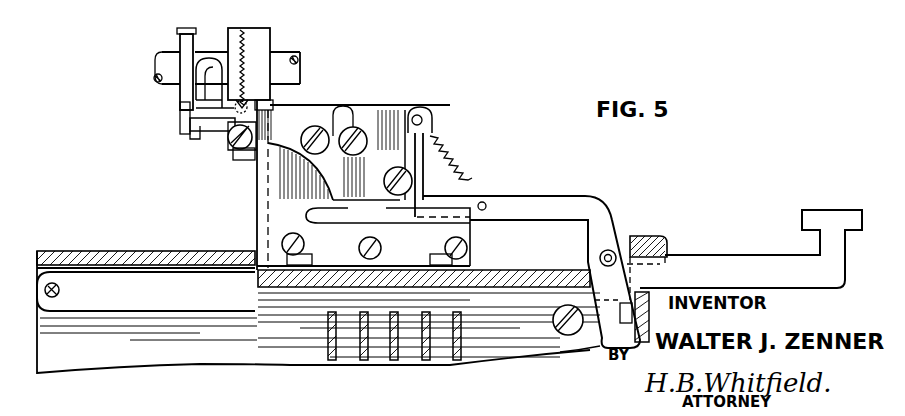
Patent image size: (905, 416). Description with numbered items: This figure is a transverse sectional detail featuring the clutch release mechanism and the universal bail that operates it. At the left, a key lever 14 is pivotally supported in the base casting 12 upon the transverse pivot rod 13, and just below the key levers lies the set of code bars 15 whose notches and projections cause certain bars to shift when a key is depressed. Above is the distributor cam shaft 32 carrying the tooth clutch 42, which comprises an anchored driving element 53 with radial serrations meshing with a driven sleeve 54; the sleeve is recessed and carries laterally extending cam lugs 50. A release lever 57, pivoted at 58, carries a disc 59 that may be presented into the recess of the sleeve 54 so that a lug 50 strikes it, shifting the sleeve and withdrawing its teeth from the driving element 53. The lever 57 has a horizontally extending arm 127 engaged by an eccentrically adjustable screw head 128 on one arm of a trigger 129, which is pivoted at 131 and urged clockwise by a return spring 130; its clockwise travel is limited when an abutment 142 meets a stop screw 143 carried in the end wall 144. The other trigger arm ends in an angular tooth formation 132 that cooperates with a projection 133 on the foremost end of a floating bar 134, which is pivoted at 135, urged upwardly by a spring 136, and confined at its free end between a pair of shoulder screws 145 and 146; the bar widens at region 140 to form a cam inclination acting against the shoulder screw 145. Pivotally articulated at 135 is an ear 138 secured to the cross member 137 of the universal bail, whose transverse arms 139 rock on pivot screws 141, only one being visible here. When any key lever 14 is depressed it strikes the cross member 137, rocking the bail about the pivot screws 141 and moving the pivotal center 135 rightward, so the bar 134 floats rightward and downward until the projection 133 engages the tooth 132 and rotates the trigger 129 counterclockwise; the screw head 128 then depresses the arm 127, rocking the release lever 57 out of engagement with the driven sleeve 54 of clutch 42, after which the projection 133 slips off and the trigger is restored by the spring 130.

The base casting 12 is at (104, 253).
The transverse pivot rod 13 is at (54, 285).
The key lever 14 is at (135, 278).
The code bars 15 is at (332, 362).
The distributor cam shaft 32 is at (162, 64).
The tooth clutch 42 is at (252, 20).
The cam lugs 50 is at (200, 96).
The driving element 53 is at (257, 38).
The driven sleeve 54 is at (180, 44).
The release lever 57 is at (215, 113).
The pivot 58 is at (182, 117).
The disc 59 is at (200, 88).
The horizontally extending arm 127 is at (250, 158).
The eccentrically adjustable screw head 128 is at (228, 138).
The trigger 129 is at (310, 124).
The return spring 130 is at (264, 97).
The pivot 131 is at (340, 110).
The angular tooth formation 132 is at (388, 235).
The projection 133 is at (322, 201).
The floating bar 134 is at (502, 206).
The pivot 135 is at (600, 256).
The spring 136 is at (436, 145).
The cross member 137 is at (645, 313).
The ear 138 is at (608, 282).
The transverse arms 139 is at (598, 332).
The cam inclination region 140 is at (412, 188).
The pivot screws 141 is at (573, 330).
The abutment 142 is at (345, 118).
The stop screw 143 is at (384, 134).
The end wall 144 is at (422, 110).
The shoulder screw 145 is at (428, 174).
The shoulder screw 146 is at (382, 246).